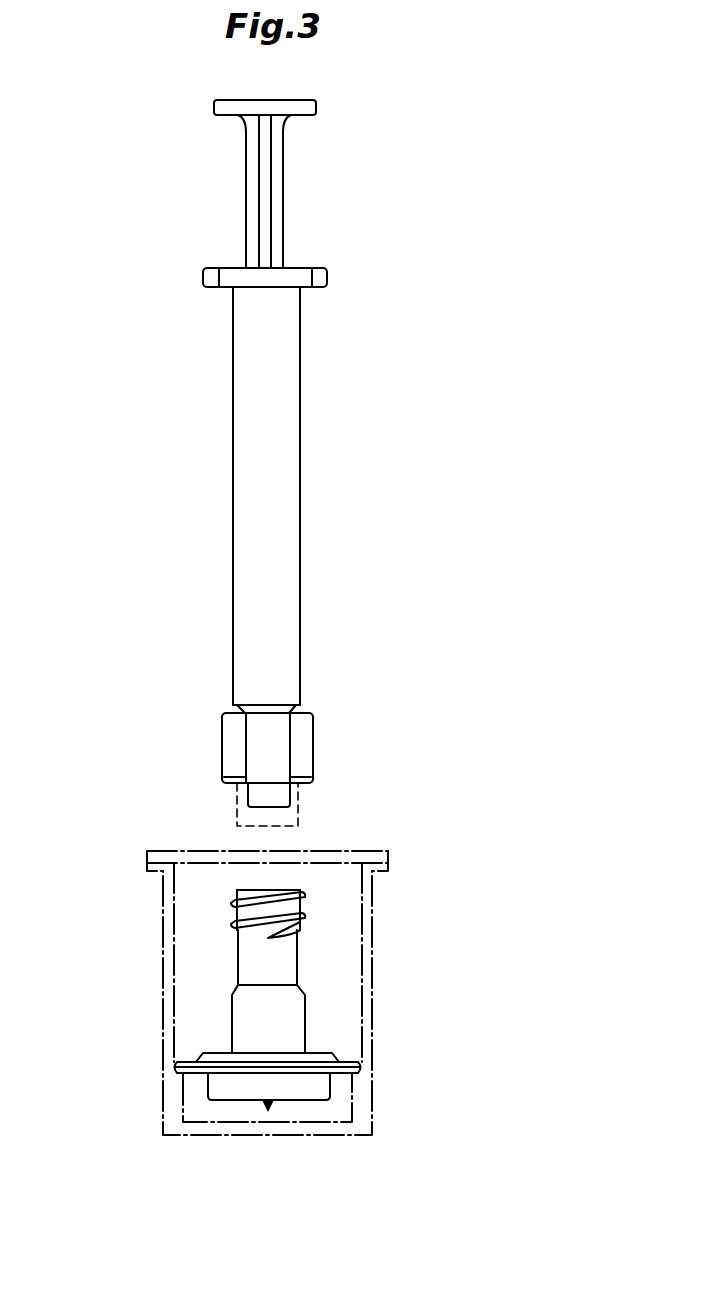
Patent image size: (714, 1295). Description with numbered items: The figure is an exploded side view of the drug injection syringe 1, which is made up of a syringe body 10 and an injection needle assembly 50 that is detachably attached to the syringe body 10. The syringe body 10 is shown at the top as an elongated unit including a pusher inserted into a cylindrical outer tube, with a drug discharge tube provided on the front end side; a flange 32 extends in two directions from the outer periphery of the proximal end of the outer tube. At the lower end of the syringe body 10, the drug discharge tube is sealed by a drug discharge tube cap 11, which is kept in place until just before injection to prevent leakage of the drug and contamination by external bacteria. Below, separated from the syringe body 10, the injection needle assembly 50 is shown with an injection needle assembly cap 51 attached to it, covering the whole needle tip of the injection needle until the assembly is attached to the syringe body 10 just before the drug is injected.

The drug injection syringe 1 is at (100, 131).
The syringe body 10 is at (305, 356).
The flange 32 is at (321, 279).
The drug discharge tube cap 11 is at (283, 820).
The injection needle assembly 50 is at (305, 939).
The injection needle assembly cap 51 is at (373, 1010).